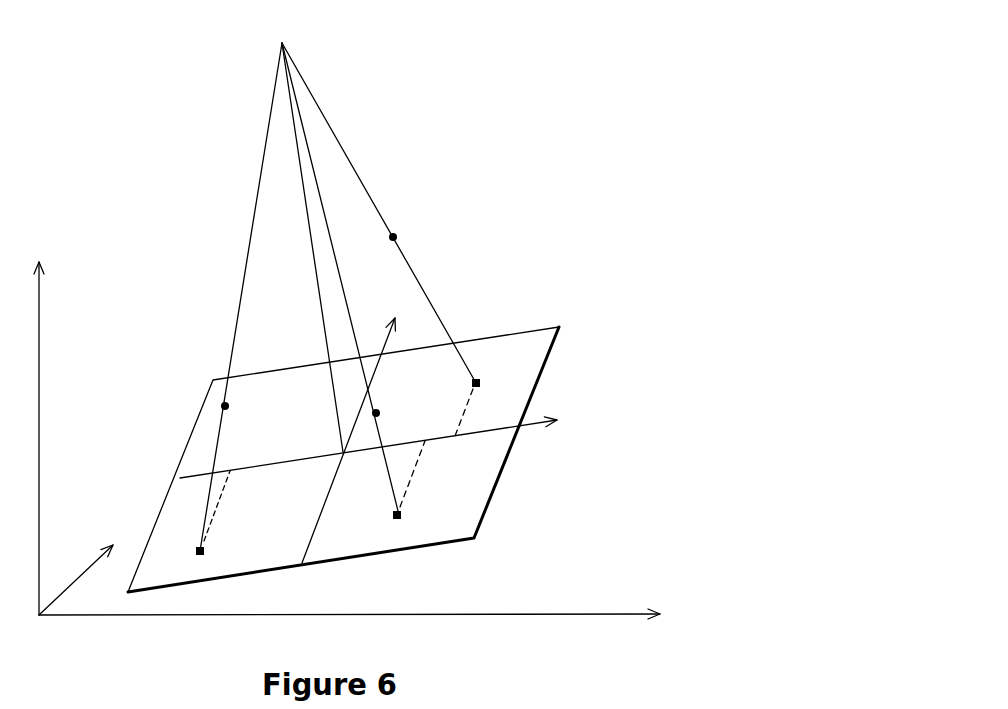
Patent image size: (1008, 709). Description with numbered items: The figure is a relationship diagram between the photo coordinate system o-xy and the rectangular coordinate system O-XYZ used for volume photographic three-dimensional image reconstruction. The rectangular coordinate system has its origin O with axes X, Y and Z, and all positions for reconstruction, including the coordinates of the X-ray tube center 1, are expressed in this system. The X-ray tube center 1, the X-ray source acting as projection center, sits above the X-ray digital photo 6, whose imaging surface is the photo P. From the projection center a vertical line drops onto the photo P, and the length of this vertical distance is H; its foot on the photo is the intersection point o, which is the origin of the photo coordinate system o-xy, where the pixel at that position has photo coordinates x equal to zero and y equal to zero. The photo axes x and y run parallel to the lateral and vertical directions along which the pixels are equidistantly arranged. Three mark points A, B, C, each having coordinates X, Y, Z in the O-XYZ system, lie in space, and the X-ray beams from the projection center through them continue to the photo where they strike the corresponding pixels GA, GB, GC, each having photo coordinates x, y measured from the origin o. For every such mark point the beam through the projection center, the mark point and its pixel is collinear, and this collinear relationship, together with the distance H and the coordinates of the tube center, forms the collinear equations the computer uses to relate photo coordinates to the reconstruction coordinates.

The X-ray tube center 1 is at (282, 43).
The X-ray digital photo 6 is at (482, 472).
The photo P is at (343, 459).
The distance from X-ray tube center to imaging surface H is at (312, 247).
The mark point A is at (462, 227).
The mark point B is at (445, 408).
The mark point C is at (296, 387).
The pixel of mark point A GA is at (519, 396).
The pixel of mark point B GB is at (443, 482).
The pixel of mark point C GC is at (254, 513).
The origin of rectangular coordinate system O-XYZ O is at (354, 430).
The origin of photo coordinate system o-xy o is at (380, 429).